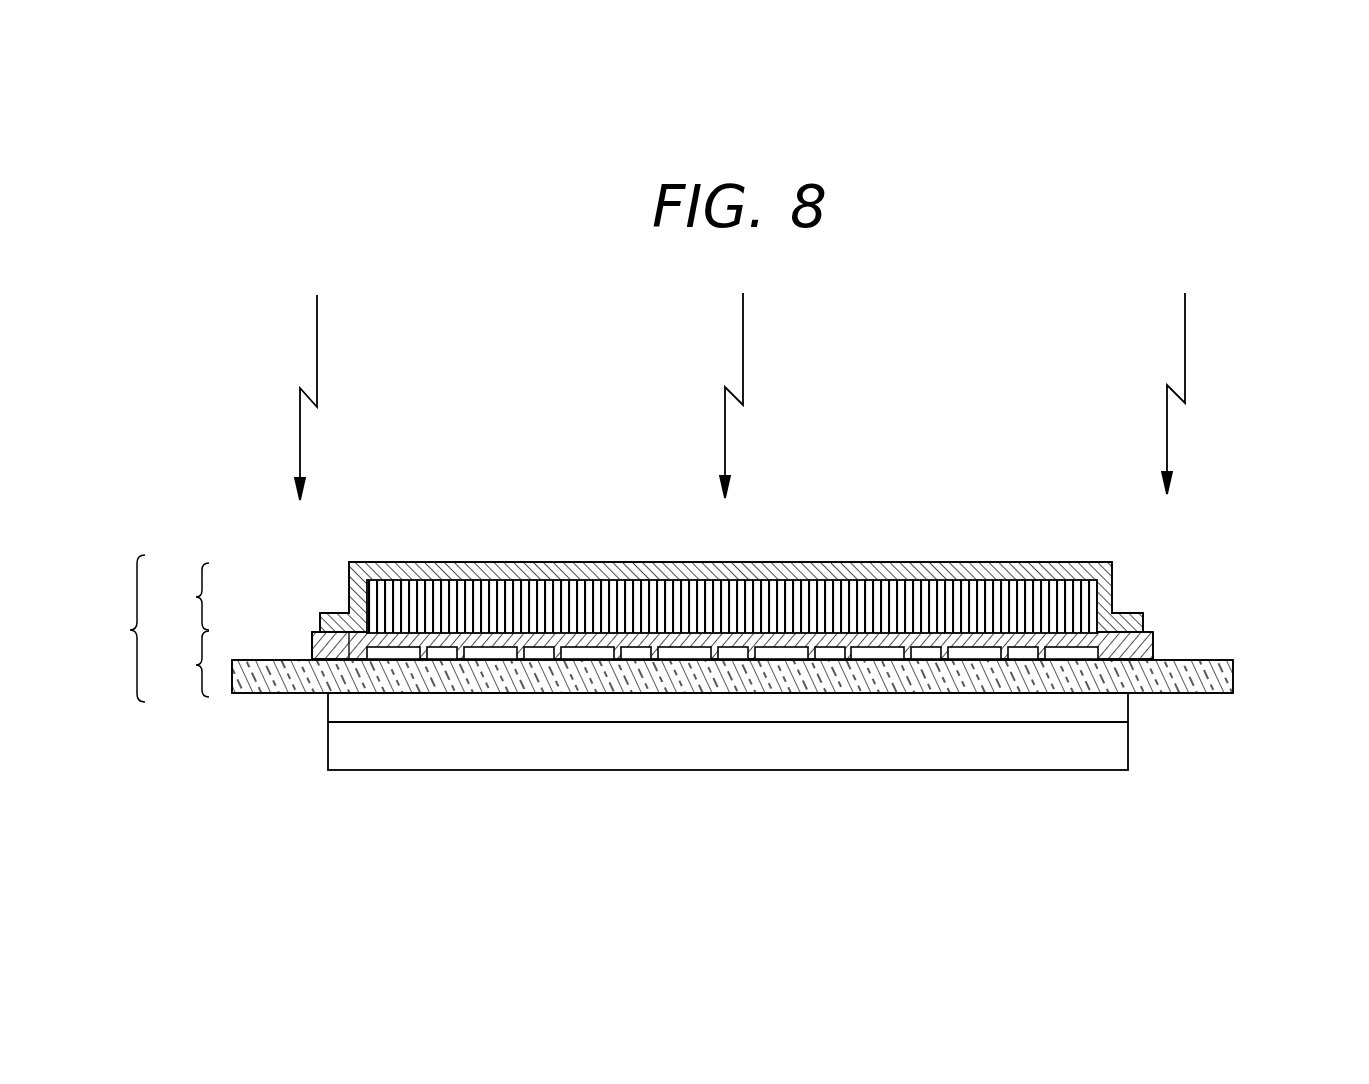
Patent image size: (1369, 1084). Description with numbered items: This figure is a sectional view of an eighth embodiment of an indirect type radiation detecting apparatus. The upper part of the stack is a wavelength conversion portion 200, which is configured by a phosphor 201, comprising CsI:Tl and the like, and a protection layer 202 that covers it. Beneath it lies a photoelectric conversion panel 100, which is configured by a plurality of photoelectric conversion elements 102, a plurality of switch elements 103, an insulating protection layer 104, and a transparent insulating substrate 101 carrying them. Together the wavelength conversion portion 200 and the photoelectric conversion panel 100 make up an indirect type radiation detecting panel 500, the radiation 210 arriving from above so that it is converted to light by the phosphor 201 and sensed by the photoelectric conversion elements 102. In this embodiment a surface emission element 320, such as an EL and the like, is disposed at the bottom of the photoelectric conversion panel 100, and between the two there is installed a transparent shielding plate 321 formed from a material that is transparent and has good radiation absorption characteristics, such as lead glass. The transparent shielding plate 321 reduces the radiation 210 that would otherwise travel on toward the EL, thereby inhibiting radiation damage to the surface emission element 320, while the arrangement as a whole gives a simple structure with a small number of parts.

The indirect type radiation detecting panel 500 is at (113, 628).
The wavelength conversion portion 200 is at (178, 596).
The photoelectric conversion panel 100 is at (178, 664).
The transparent insulating substrate 101 is at (1218, 668).
The photoelectric conversion elements 102 is at (1089, 646).
The switch elements 103 is at (1040, 648).
The insulating protection layer 104 is at (312, 640).
The phosphor 201 is at (796, 590).
The protection layer 202 is at (948, 572).
The radiation 210 is at (745, 352).
The surface emission element 320 is at (952, 750).
The transparent shielding plate 321 is at (758, 708).